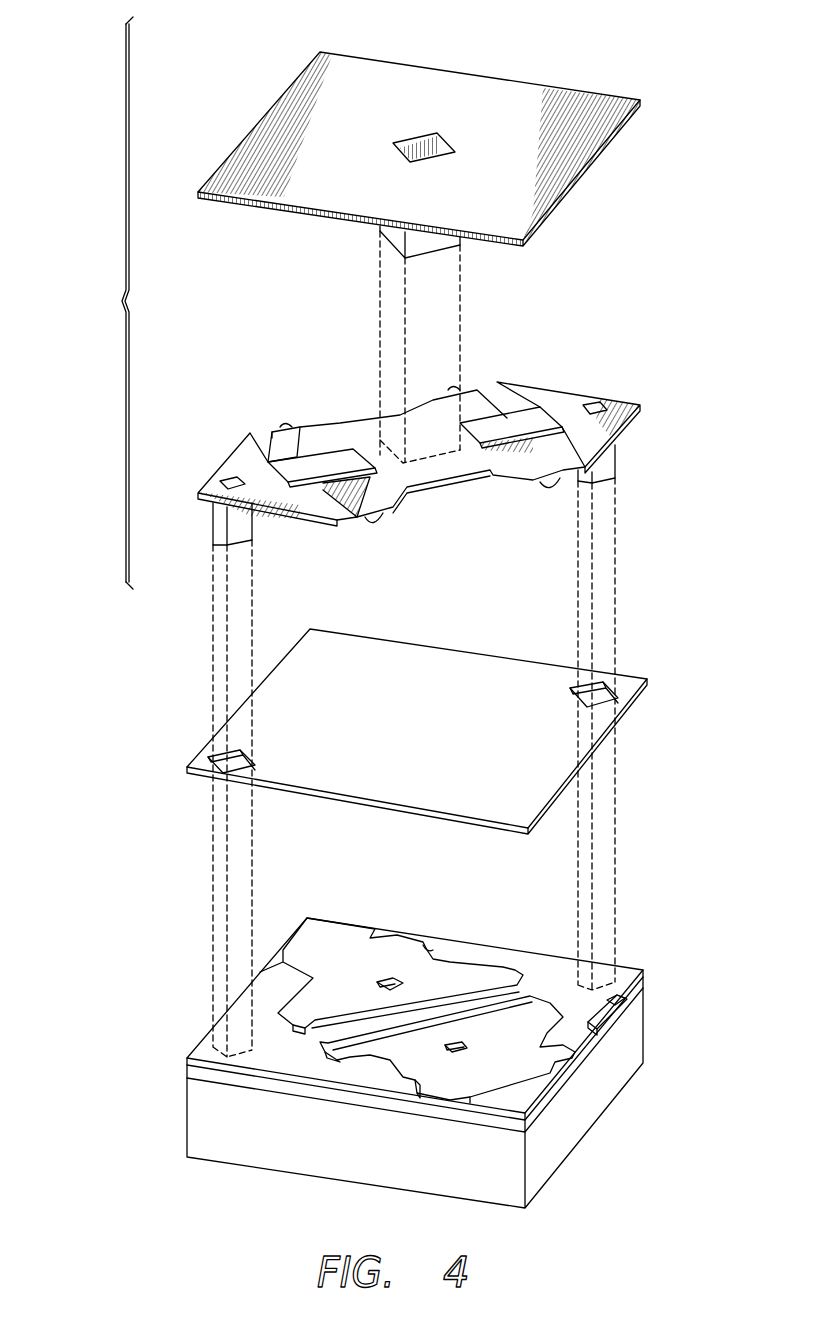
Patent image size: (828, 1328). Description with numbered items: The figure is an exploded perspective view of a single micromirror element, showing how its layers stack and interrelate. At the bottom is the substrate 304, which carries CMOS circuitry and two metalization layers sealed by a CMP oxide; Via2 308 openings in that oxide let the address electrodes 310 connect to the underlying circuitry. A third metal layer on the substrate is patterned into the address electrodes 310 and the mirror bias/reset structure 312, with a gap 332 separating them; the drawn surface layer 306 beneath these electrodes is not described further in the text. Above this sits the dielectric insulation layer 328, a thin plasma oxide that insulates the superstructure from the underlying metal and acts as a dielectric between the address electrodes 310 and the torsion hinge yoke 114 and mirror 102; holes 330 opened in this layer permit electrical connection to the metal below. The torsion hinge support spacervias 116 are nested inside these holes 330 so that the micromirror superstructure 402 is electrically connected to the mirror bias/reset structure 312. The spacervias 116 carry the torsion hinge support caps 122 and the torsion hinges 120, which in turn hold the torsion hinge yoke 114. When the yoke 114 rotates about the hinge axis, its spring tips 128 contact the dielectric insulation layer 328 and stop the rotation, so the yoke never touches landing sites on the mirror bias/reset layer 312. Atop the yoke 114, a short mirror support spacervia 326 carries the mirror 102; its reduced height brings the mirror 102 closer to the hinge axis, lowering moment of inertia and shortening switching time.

The mirror 102 is at (390, 80).
The torsion hinge yoke 114 is at (470, 398).
The torsion hinge support spacervias 116 is at (218, 518).
The torsion hinges 120 is at (320, 466).
The torsion hinge support caps 122 is at (240, 463).
The spring tips 128 is at (387, 517).
The substrate 304 is at (582, 1110).
The insulating layer 306 is at (188, 1072).
The Via2 308 is at (467, 1043).
The address electrodes 310 is at (313, 963).
The mirror bias/reset structure 312 is at (292, 1048).
The mirror support spacervia 326 is at (428, 243).
The dielectric insulation layer 328 is at (425, 660).
The holes 330 is at (613, 693).
The gap 332 is at (467, 955).
The micromirror superstructure 402 is at (101, 303).